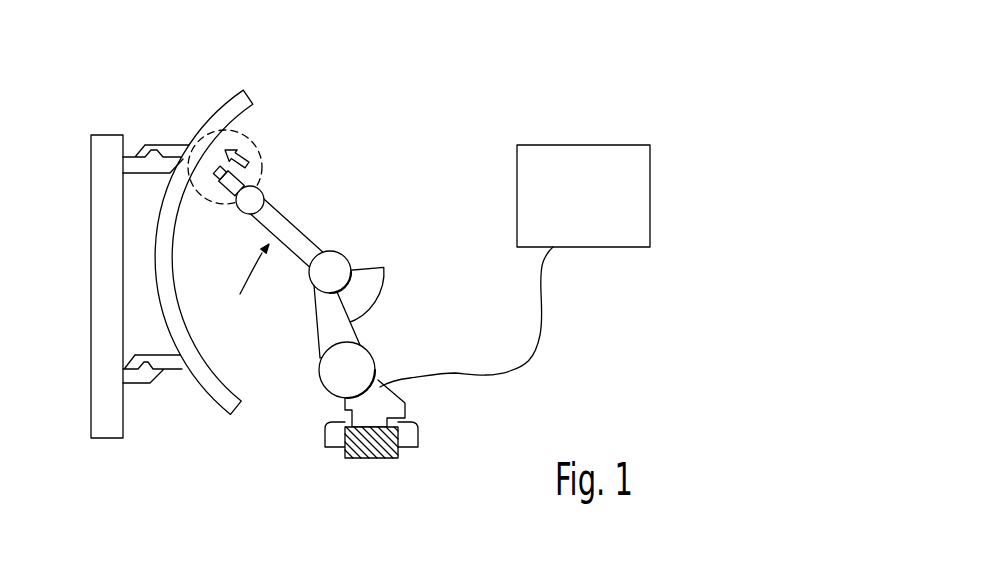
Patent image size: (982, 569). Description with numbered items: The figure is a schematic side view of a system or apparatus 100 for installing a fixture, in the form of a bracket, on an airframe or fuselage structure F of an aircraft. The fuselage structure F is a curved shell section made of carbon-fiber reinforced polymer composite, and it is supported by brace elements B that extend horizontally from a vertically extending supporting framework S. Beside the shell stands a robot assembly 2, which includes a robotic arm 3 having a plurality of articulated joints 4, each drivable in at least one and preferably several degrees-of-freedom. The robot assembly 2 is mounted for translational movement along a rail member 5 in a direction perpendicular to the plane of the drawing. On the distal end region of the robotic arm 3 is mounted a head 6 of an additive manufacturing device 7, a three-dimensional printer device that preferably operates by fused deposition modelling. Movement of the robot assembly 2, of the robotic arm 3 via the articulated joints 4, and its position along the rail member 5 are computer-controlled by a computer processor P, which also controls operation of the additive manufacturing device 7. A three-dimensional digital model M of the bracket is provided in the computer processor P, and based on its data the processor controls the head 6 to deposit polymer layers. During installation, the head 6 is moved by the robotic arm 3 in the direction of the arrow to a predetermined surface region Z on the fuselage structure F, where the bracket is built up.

The system or apparatus 100 is at (482, 119).
The robot assembly 2 is at (309, 324).
The robotic arm 3 is at (296, 238).
The articulated joints 4 is at (251, 200).
The rail member 5 is at (368, 452).
The head 6 is at (221, 190).
The additive manufacturing device 7 is at (248, 276).
The supporting framework S is at (102, 320).
The brace elements B is at (145, 145).
The surface region Z is at (189, 146).
The fuselage structure F is at (232, 101).
The computer processor P is at (583, 192).
The three-dimensional digital model M is at (592, 224).